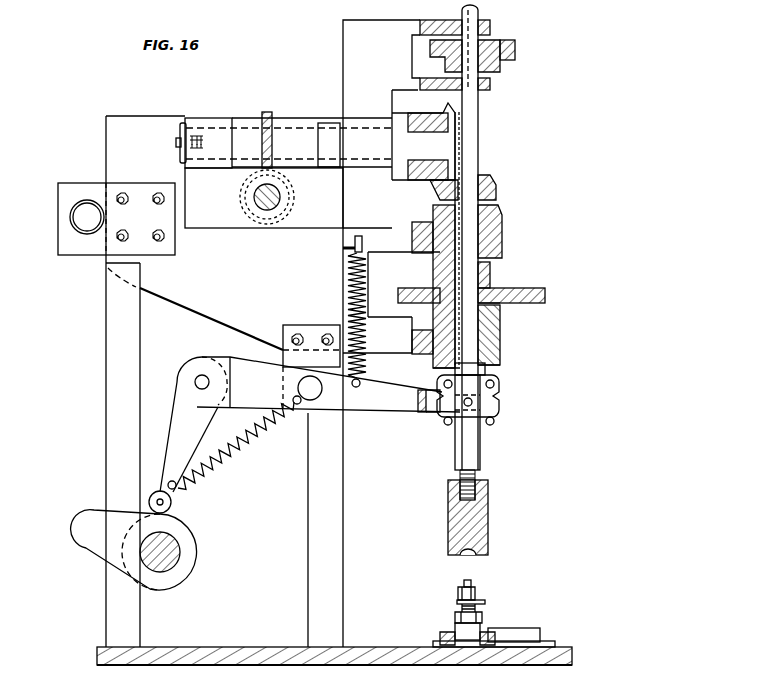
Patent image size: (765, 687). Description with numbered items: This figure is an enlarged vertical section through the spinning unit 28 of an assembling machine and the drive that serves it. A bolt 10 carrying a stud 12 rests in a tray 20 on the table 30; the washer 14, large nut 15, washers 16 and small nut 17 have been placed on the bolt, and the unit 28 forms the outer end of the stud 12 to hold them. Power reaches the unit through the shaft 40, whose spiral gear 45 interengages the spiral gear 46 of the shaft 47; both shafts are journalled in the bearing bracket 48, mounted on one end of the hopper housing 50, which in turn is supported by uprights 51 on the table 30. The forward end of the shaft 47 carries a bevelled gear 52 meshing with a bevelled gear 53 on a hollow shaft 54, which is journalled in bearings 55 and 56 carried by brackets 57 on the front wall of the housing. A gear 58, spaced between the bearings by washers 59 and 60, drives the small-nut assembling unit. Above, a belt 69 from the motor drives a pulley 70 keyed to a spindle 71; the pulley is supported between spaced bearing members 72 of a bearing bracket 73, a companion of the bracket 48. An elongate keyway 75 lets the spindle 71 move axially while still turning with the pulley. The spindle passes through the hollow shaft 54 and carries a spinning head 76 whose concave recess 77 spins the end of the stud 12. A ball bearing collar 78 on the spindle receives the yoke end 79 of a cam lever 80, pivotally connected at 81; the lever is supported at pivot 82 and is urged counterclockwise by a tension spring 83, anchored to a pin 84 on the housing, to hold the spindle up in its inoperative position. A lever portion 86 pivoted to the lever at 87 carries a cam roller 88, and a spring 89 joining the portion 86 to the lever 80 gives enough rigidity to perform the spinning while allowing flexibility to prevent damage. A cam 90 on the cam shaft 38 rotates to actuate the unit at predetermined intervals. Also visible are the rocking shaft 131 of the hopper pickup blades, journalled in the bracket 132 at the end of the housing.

The bolt 10 is at (467, 645).
The stud 12 is at (471, 583).
The washer 14 is at (482, 628).
The large nut 15 is at (455, 616).
The washers 16 is at (485, 602).
The small nut 17 is at (458, 592).
The tray 20 is at (532, 634).
The unit 28 is at (535, 377).
The table 30 is at (272, 646).
The cam shaft 38 is at (172, 562).
The shaft 40 is at (268, 208).
The spiral gear 45 is at (290, 224).
The spiral gear 46 is at (266, 112).
The shaft 47 is at (288, 135).
The bearing bracket 48 is at (212, 223).
The hopper housing 50 is at (110, 162).
The uprights 51 is at (106, 405).
The bevelled gear 52 is at (418, 180).
The bevelled gear 53 is at (498, 180).
The hollow shaft 54 is at (478, 172).
The bearing 55 is at (502, 238).
The bearing 56 is at (500, 344).
The brackets 57 is at (398, 232).
The gear 58 is at (520, 290).
The washer 59 is at (492, 274).
The washer 60 is at (496, 305).
The belt 69 is at (515, 55).
The pulley 70 is at (505, 62).
The spindle 71 is at (474, 128).
The bearing members 72 is at (490, 34).
The bearing bracket 73 is at (343, 52).
The keyway 75 is at (462, 10).
The spinning head 76 is at (488, 510).
The concave recess 77 is at (460, 555).
The ball bearing collar 78 is at (494, 424).
The yoke end 79 is at (428, 414).
The cam lever 80 is at (362, 408).
The pivotal connection 81 is at (484, 402).
The pivot 82 is at (306, 400).
The tension spring 83 is at (366, 285).
The pin 84 is at (358, 240).
The lever portion 86 is at (166, 424).
The pivot 87 is at (200, 372).
The cam roller 88 is at (172, 503).
The spring 89 is at (216, 462).
The cam 90 is at (102, 556).
The rocking shaft 131 is at (72, 219).
The bracket 132 is at (156, 183).